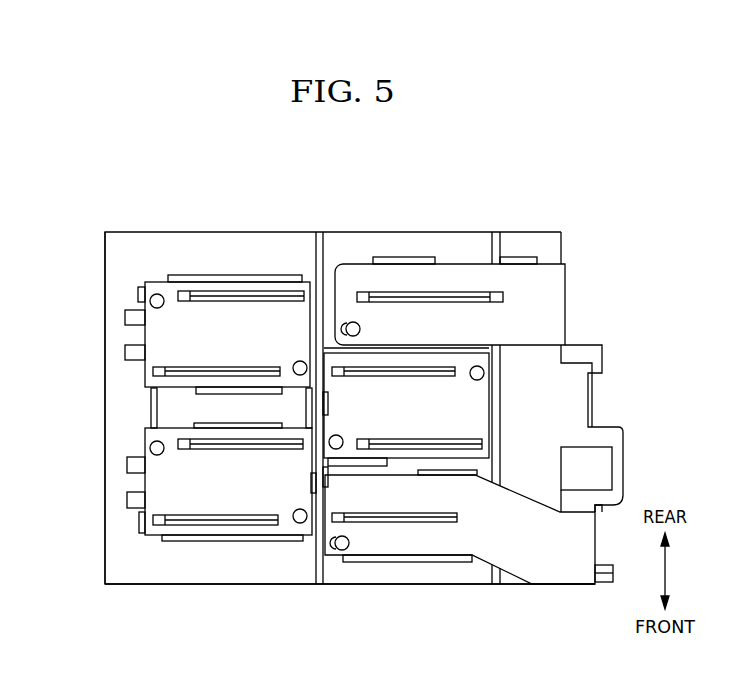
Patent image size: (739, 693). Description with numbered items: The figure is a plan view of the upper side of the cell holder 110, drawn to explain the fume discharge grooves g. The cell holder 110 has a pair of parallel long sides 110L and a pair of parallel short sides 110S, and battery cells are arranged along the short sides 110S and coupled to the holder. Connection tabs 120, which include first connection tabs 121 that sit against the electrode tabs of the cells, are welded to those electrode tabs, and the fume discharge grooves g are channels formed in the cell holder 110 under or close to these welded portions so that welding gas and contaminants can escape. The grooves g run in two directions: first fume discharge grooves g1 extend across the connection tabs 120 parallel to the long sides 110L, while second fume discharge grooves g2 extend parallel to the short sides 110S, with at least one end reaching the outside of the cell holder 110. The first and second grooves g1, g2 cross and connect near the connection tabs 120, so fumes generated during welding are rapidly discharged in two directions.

The cell holder 110 is at (404, 240).
The short sides 110S is at (105, 546).
The long sides 110L is at (212, 584).
The connection tabs 120 is at (241, 287).
The first connection tab 121 is at (225, 408).
The fume discharge grooves g is at (271, 440).
The first fume discharge grooves g1 is at (127, 497).
The second fume discharge grooves g2 is at (320, 584).